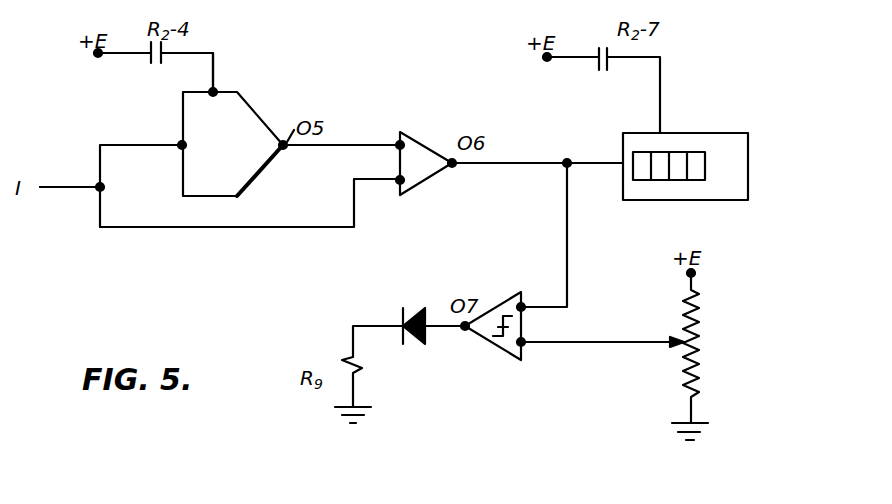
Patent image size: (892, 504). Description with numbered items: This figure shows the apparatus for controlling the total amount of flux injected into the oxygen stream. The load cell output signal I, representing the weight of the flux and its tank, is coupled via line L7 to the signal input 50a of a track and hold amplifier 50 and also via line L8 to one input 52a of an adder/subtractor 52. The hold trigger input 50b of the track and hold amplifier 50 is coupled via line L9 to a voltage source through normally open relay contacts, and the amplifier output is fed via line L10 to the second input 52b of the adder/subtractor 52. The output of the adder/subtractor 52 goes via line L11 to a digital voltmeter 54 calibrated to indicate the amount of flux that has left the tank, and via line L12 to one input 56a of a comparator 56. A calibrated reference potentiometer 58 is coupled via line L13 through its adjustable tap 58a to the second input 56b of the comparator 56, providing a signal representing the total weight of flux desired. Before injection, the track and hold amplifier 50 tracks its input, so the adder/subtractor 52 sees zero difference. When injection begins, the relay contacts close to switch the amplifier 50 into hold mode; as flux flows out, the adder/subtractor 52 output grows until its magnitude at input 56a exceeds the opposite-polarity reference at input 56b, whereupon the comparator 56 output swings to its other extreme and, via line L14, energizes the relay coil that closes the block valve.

The track and hold amplifier 50 is at (263, 117).
The signal input 50a is at (178, 140).
The hold trigger input 50b is at (215, 90).
The adder/subtractor 52 is at (427, 138).
The one input of adder/subtractor 52a is at (397, 184).
The second input of adder/subtractor 52b is at (398, 141).
The digital voltmeter 54 is at (748, 167).
The comparator 56 is at (493, 343).
The one input of comparator 56a is at (523, 303).
The second input of comparator 56b is at (525, 344).
The reference potentiometer 58 is at (686, 340).
The adjustable tap 58a is at (676, 338).
The line L7 is at (62, 188).
The line L8 is at (227, 232).
The line L9 is at (213, 53).
The line L10 is at (348, 148).
The line L11 is at (507, 162).
The line L12 is at (568, 237).
The line L13 is at (622, 345).
The line L14 is at (377, 315).